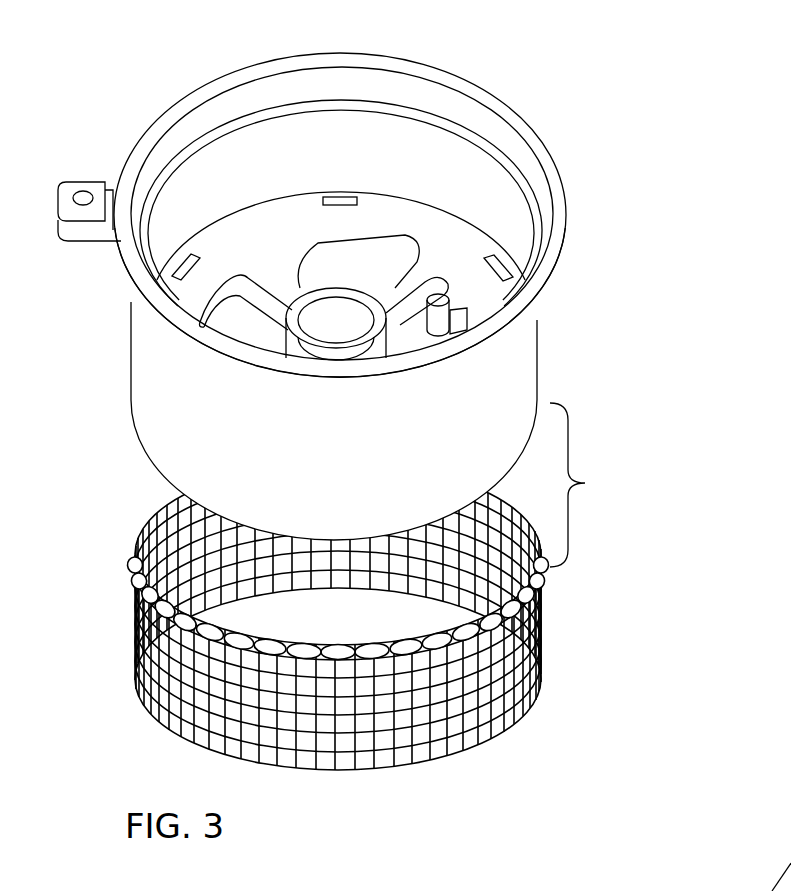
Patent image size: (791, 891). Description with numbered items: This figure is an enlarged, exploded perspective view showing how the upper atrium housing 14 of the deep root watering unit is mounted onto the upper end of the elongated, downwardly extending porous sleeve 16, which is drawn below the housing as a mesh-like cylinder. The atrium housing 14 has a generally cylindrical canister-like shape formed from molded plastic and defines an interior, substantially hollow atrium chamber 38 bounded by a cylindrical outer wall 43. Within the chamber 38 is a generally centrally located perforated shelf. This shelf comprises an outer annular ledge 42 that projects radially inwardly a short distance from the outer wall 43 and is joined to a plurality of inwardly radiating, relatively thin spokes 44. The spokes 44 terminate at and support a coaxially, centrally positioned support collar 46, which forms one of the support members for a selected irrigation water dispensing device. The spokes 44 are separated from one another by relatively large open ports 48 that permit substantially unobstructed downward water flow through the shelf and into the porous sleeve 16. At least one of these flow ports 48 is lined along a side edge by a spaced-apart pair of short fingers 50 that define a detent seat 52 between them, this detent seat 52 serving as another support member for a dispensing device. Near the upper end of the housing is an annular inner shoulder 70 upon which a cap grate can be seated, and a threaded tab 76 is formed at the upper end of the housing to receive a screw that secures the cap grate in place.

The upper atrium housing 14 is at (406, 285).
The porous sleeve 16 is at (430, 768).
The atrium chamber 38 is at (456, 186).
The outer annular ledge 42 is at (290, 219).
The cylindrical outer wall 43 is at (418, 150).
The spokes 44 is at (400, 290).
The support collar 46 is at (287, 333).
The open ports 48 is at (288, 282).
The fingers 50 is at (436, 280).
The detent seat 52 is at (462, 322).
The annular inner shoulder 70 is at (283, 107).
The threaded tab 76 is at (76, 226).